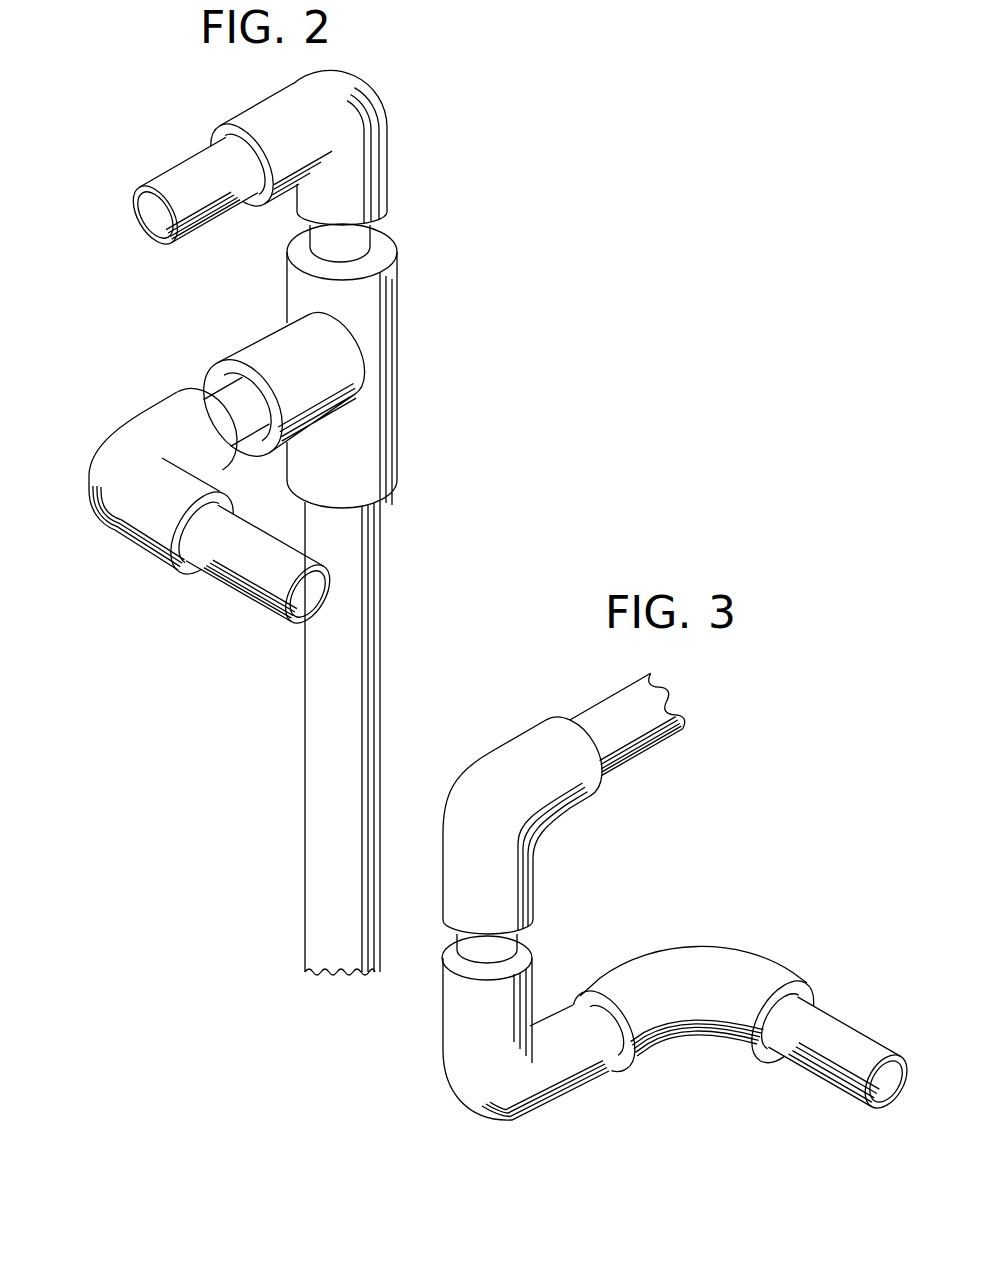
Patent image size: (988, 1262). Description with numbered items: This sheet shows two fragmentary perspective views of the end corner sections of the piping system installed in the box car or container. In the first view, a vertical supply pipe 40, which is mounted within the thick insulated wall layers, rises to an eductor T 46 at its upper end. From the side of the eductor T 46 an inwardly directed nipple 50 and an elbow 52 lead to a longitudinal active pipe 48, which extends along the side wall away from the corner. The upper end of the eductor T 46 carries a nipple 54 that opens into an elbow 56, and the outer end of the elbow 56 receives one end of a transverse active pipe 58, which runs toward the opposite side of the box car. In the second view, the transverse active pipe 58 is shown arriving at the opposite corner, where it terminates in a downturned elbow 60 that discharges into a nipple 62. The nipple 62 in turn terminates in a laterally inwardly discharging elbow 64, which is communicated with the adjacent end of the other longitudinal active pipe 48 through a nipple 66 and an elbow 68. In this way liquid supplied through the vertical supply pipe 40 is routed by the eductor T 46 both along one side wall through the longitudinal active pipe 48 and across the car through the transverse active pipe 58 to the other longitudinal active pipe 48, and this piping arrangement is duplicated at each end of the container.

In FIG. 2, the vertical supply pipe 40 is at (350, 675).
In FIG. 2, the eductor T 46 is at (373, 368).
In FIG. 2, the longitudinal active pipe 48 is at (248, 585).
In FIG. 3, the longitudinal active pipe 48 is at (850, 1045).
In FIG. 2, the nipple 50 is at (225, 400).
In FIG. 2, the elbow 52 is at (103, 456).
In FIG. 2, the nipple 54 is at (347, 248).
In FIG. 2, the elbow 56 is at (365, 192).
In FIG. 2, the transverse active pipe 58 is at (185, 181).
In FIG. 3, the transverse active pipe 58 is at (637, 755).
In FIG. 3, the downturned elbow 60 is at (508, 853).
In FIG. 3, the nipple 62 is at (480, 955).
In FIG. 3, the elbow 64 is at (472, 1090).
In FIG. 3, the nipple 66 is at (605, 1064).
In FIG. 3, the elbow 68 is at (715, 1015).